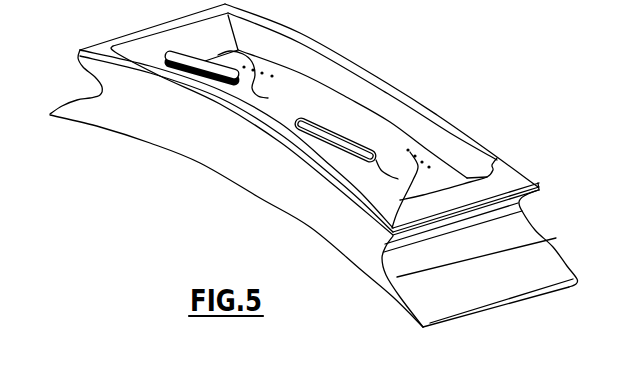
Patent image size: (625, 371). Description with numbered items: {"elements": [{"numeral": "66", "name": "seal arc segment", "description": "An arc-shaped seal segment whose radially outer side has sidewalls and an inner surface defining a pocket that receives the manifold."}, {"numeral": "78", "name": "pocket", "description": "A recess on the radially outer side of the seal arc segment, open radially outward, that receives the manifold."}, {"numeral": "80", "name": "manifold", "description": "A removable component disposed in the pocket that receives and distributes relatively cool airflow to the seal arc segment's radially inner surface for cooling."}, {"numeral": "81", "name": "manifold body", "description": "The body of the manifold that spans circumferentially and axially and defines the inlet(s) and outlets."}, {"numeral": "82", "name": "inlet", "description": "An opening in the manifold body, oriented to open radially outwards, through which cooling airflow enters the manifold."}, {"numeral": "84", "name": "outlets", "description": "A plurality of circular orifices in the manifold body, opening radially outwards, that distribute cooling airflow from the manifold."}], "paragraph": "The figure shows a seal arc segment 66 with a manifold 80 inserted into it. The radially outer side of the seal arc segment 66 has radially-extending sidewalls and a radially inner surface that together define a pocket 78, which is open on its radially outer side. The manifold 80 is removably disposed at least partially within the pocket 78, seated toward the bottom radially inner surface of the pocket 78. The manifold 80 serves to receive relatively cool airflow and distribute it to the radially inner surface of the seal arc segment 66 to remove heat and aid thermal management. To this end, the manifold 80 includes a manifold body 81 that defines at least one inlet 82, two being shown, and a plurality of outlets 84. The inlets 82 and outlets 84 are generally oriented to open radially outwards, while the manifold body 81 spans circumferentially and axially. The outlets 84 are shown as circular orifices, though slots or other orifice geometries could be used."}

The curved housing segment 66 is at (160, 195).
The recessed pocket 78 is at (323, 101).
The pad region 80 is at (411, 140).
The oblong slot 81 is at (353, 113).
The apertures 82 is at (236, 61).
The slit 84 is at (389, 227).